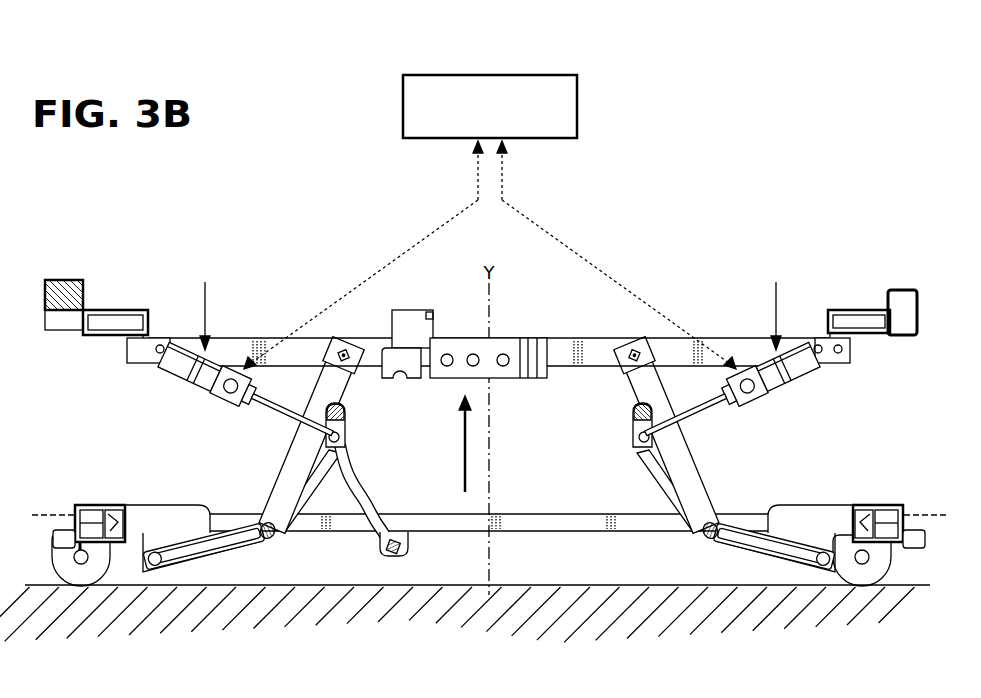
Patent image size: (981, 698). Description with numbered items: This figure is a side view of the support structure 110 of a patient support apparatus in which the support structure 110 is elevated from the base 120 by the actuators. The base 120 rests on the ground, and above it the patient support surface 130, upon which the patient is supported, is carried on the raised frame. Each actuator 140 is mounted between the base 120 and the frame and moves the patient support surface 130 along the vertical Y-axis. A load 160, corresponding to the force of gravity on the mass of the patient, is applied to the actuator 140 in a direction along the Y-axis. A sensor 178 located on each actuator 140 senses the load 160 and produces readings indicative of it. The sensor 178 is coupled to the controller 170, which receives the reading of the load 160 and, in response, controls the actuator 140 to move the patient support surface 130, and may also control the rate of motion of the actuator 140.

The support structure 110 is at (597, 250).
The base 120 is at (578, 560).
The patient support surface 130 is at (550, 350).
The actuator 140 is at (236, 368).
The load 160 is at (203, 336).
The controller 170 is at (447, 75).
The sensor 178 is at (232, 404).